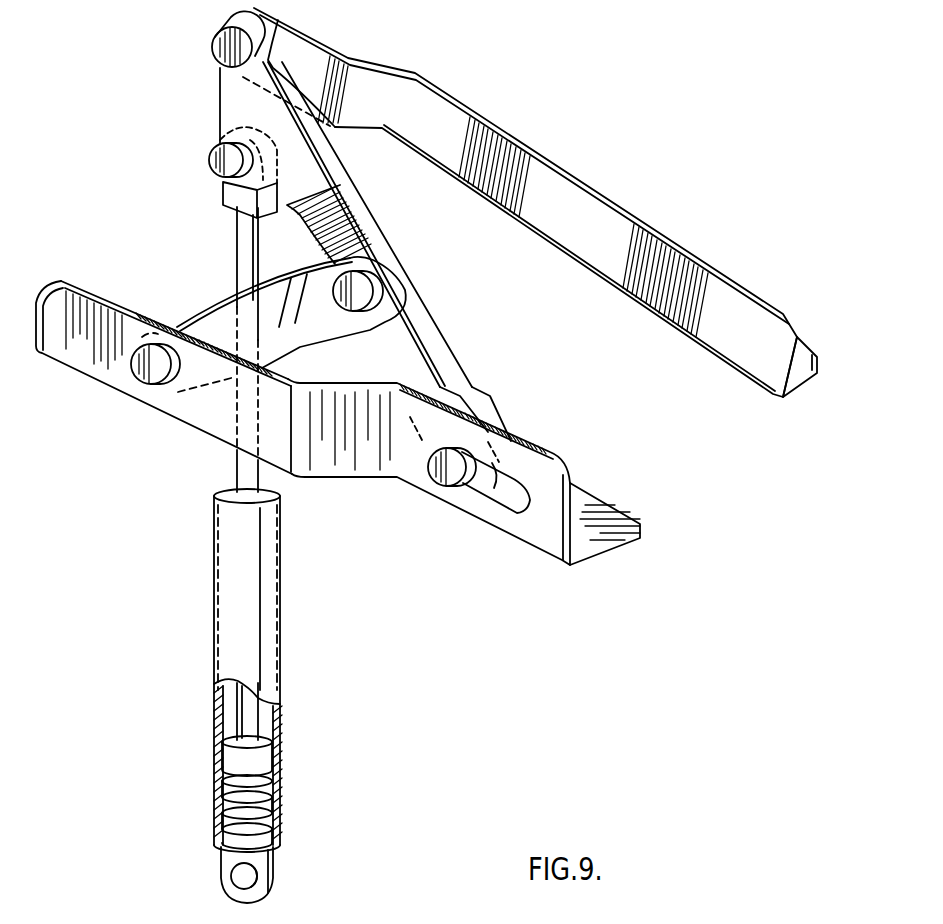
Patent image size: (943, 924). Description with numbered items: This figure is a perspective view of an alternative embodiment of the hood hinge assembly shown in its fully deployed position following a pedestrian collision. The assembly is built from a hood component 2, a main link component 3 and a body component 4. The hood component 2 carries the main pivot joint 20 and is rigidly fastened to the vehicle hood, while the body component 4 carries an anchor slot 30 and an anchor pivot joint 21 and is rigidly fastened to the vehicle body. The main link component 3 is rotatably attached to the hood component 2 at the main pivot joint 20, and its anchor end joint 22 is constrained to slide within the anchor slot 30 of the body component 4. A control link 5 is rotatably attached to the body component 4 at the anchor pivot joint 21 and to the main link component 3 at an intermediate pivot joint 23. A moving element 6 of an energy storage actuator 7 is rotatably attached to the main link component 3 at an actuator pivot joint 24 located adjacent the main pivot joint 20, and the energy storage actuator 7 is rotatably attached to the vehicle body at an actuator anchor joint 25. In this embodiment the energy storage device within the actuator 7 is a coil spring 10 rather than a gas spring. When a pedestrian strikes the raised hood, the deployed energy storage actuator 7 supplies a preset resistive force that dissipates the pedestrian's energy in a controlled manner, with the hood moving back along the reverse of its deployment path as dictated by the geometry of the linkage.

The hood component 2 is at (567, 187).
The main link component 3 is at (452, 340).
The body component 4 is at (347, 466).
The control link 5 is at (207, 327).
The moving element 6 is at (240, 232).
The energy storage actuator 7 is at (263, 627).
The coil spring 10 is at (262, 786).
The main pivot joint 20 is at (215, 31).
The anchor pivot joint 21 is at (148, 385).
The anchor end joint 22 is at (433, 486).
The intermediate pivot joint 23 is at (395, 272).
The actuator pivot joint 24 is at (213, 171).
The actuator anchor joint 25 is at (263, 862).
The anchor slot 30 is at (507, 480).